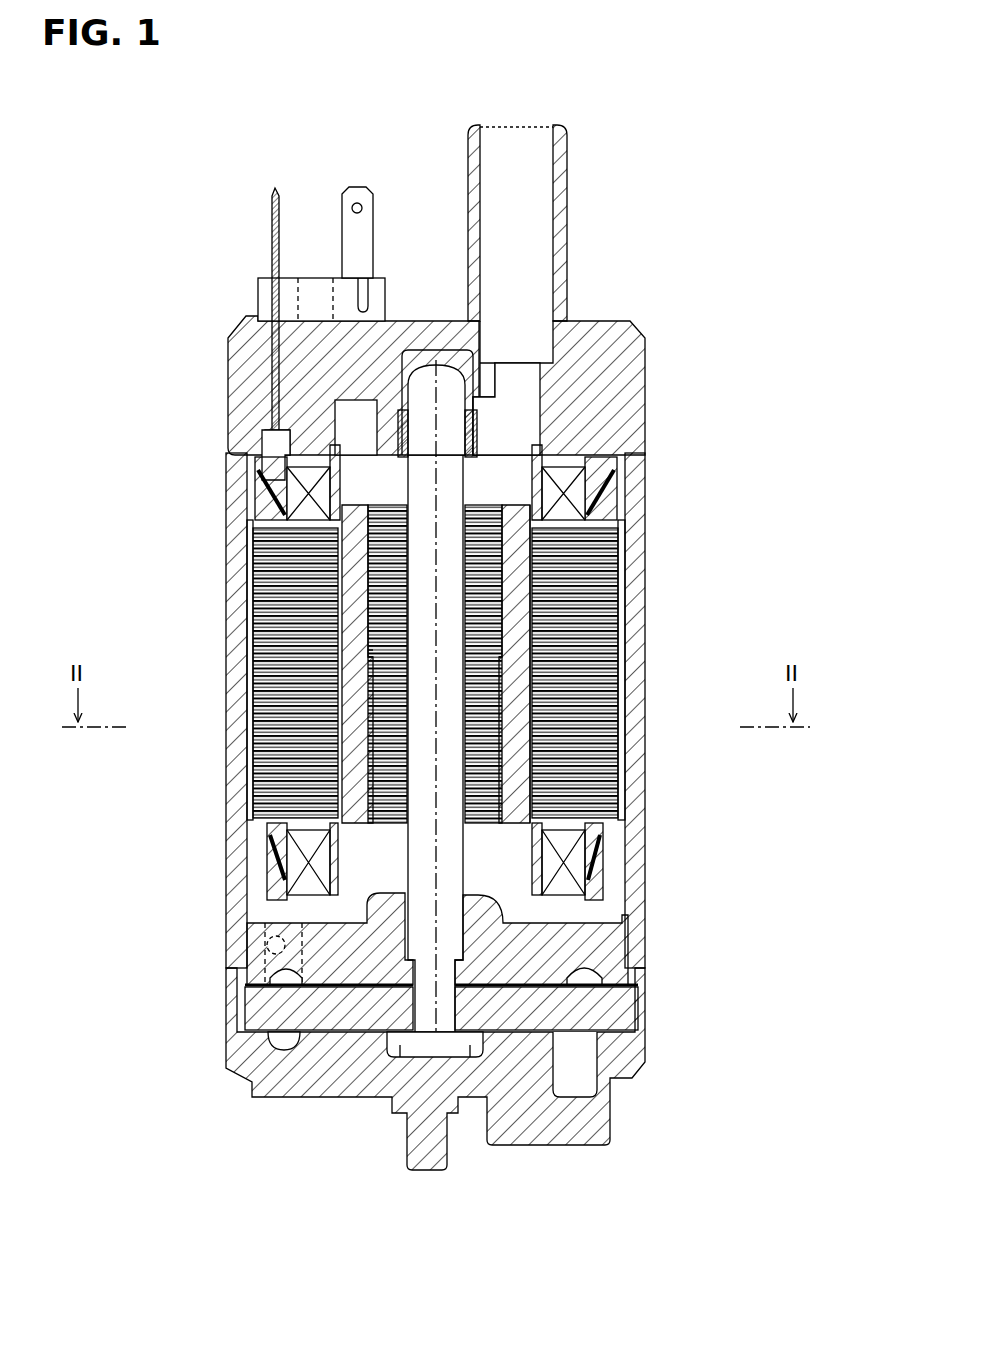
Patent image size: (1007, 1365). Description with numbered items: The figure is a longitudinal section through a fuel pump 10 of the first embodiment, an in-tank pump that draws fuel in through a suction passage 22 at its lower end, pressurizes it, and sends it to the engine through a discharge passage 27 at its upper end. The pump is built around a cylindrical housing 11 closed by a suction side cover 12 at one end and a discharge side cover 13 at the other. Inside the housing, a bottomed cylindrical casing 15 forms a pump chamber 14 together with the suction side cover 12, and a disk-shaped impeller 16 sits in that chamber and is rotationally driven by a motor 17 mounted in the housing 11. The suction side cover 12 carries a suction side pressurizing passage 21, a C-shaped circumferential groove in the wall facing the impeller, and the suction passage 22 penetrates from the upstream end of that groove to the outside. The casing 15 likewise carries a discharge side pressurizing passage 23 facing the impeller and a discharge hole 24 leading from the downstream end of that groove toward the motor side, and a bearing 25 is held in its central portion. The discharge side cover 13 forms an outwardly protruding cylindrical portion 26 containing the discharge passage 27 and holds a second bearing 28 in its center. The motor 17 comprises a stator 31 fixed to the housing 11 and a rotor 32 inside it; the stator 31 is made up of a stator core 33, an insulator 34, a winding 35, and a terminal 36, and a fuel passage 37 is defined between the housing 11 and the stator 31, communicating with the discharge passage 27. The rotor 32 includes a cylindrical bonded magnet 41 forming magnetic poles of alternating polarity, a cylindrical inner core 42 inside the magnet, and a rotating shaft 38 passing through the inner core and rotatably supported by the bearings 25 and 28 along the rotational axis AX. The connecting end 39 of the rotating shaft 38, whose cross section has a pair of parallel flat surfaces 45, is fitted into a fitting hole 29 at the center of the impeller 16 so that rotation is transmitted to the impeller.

The fuel pump 10 is at (594, 124).
The housing 11 is at (236, 605).
The suction side cover 12 is at (262, 1080).
The discharge side cover 13 is at (245, 345).
The pump chamber 14 is at (262, 1022).
The casing 15 is at (320, 922).
The impeller 16 is at (615, 1010).
The motor 17 is at (262, 851).
The suction side pressurizing passage 21 is at (280, 1040).
The suction passage 22 is at (573, 1132).
The discharge side pressurizing passage 23 is at (262, 982).
The discharge hole 24 is at (245, 933).
The bearing 25 is at (470, 915).
The cylindrical portion 26 is at (560, 236).
The discharge passage 27 is at (552, 214).
The bearing 28 is at (400, 432).
The fitting hole 29 is at (480, 957).
The stator 31 is at (623, 554).
The rotor 32 is at (493, 503).
The stator core 33 is at (575, 600).
The insulator 34 is at (600, 835).
The winding 35 is at (565, 856).
The terminal 36 is at (275, 187).
The fuel passage 37 is at (250, 657).
The rotating shaft 38 is at (455, 657).
The connecting end 39 is at (448, 1008).
The bonded magnet 41 is at (522, 752).
The inner core 42 is at (490, 700).
The flat surfaces 45 is at (387, 1040).
The rotational axis AX is at (436, 797).